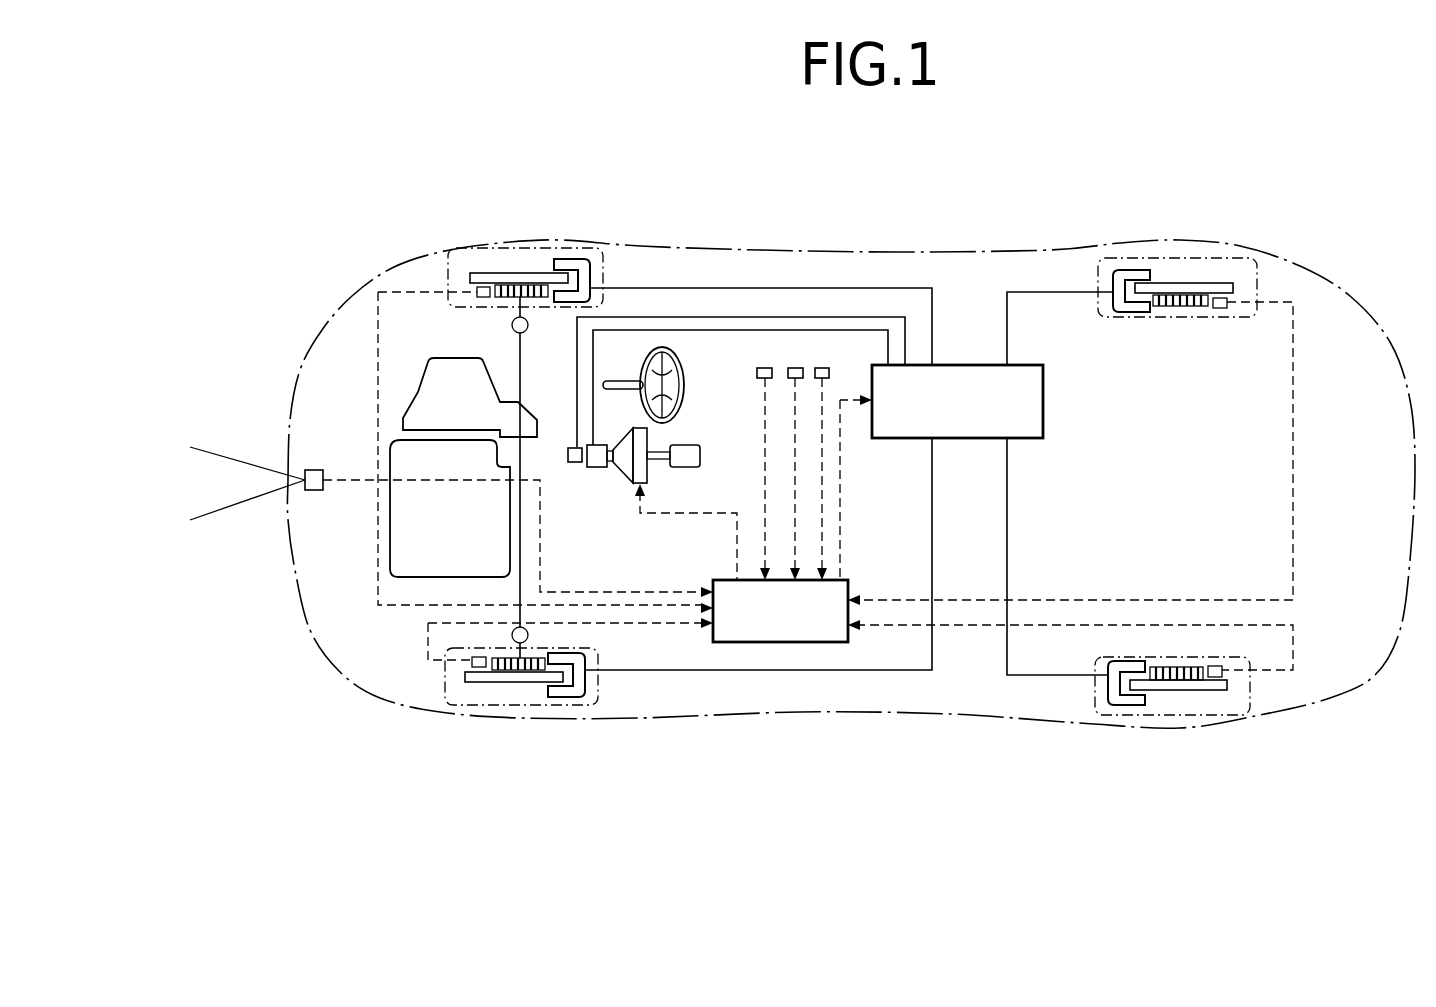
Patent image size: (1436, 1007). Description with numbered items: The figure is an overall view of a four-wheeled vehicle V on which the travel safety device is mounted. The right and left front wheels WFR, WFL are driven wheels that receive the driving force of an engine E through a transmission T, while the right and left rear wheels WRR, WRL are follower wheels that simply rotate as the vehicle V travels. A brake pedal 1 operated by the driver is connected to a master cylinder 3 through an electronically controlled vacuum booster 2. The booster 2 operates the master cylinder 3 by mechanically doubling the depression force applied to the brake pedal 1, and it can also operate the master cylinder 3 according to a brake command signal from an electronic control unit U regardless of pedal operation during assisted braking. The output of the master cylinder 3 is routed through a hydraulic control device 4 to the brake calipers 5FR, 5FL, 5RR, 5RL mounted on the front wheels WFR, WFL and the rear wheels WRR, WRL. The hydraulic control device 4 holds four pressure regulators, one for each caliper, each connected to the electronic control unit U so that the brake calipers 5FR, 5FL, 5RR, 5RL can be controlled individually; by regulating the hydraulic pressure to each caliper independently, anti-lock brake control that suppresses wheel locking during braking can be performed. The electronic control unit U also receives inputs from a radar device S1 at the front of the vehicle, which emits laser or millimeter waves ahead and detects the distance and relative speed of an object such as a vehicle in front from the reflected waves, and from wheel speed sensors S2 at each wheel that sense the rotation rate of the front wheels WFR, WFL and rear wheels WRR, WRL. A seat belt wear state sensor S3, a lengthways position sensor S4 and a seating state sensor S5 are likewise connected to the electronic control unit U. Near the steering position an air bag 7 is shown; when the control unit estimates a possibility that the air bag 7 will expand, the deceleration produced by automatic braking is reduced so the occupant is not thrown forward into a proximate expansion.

The vehicle V is at (852, 212).
The right front wheel WFR is at (492, 245).
The left front wheel WFL is at (493, 707).
The right rear wheel WRR is at (1167, 256).
The left rear wheel WRL is at (1155, 717).
The brake caliper 5FR is at (574, 252).
The brake caliper 5FL is at (576, 706).
The brake caliper 5RR is at (1110, 255).
The brake caliper 5RL is at (1115, 709).
The radar device S1 is at (317, 490).
The wheel speed sensor S2 is at (1228, 752).
The seat belt wear state sensor S3 is at (757, 372).
The lengthways position sensor S4 is at (795, 368).
The seating state sensor S5 is at (832, 348).
The brake pedal 1 is at (692, 455).
The electronically controlled vacuum booster 2 is at (637, 478).
The master cylinder 3 is at (578, 462).
The hydraulic control device 4 is at (969, 419).
The air bag 7 is at (666, 387).
The transmission T is at (468, 405).
The engine E is at (453, 525).
The electronic control unit U is at (789, 628).